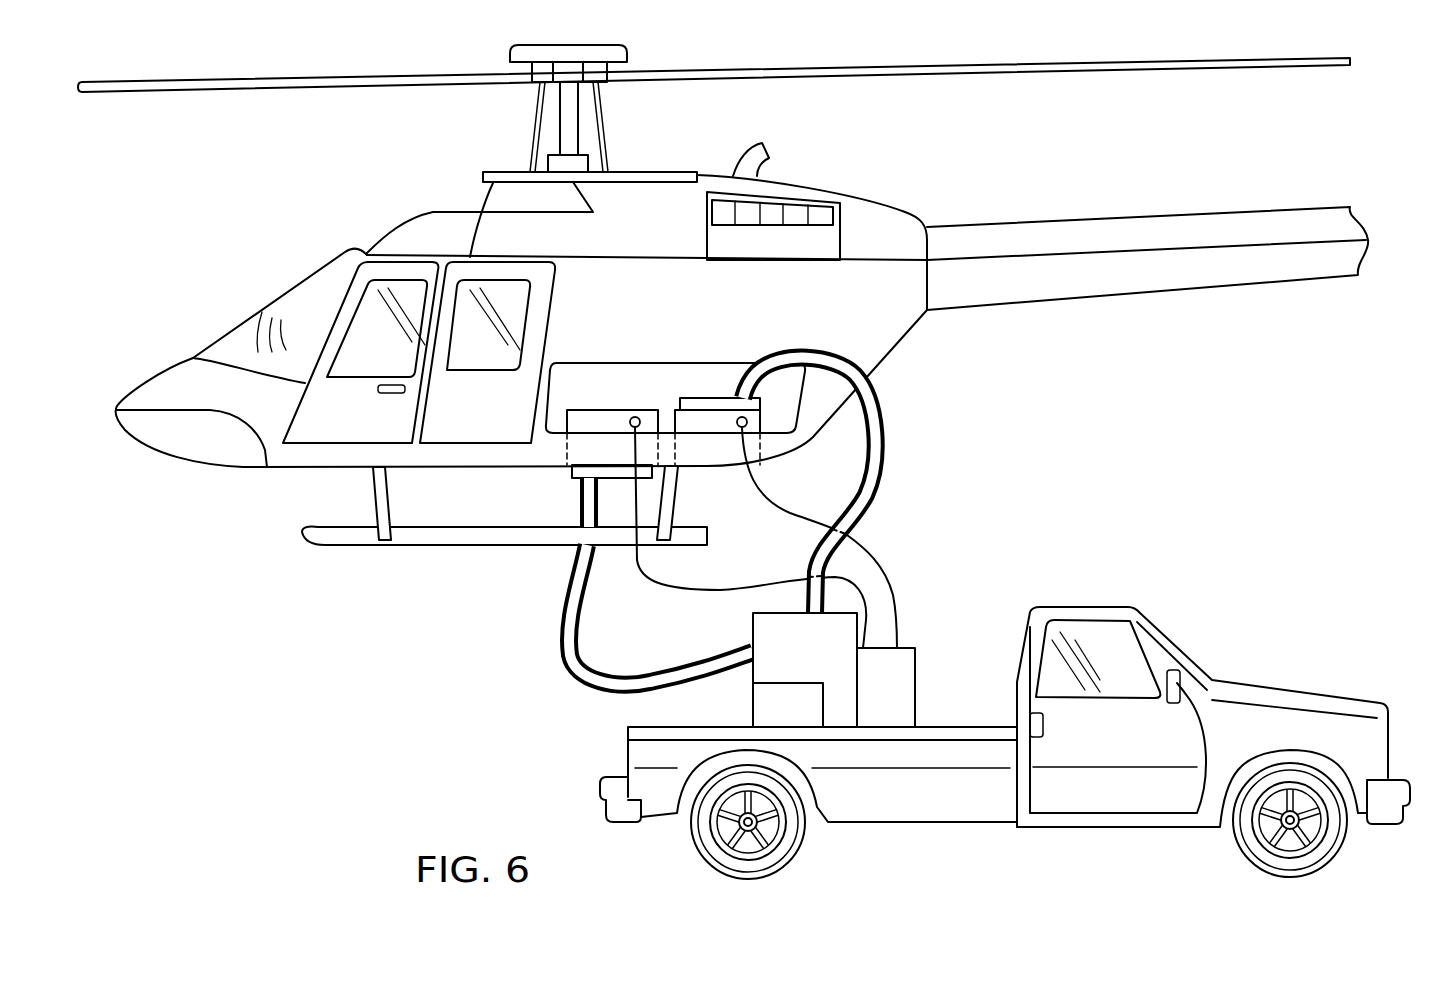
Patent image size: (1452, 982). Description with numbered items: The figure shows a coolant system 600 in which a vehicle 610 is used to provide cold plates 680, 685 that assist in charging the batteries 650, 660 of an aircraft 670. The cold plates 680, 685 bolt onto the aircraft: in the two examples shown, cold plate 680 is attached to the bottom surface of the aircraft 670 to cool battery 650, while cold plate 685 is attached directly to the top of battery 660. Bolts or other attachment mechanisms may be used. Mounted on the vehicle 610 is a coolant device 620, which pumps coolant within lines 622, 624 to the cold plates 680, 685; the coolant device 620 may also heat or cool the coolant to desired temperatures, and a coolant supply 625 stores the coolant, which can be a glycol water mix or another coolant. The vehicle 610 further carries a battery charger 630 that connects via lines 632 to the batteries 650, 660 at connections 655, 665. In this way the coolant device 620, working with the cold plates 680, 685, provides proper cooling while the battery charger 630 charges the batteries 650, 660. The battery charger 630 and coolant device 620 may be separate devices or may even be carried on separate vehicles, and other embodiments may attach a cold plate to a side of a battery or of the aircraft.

The coolant system 600 is at (1397, 122).
The vehicle 610 is at (1067, 827).
The coolant device 620 is at (753, 633).
The line 622 is at (812, 563).
The line 624 is at (875, 508).
The coolant supply 625 is at (788, 683).
The battery charger 630 is at (916, 690).
The line 632 is at (892, 598).
The battery 650 is at (602, 409).
The connection 655 is at (633, 416).
The battery 660 is at (705, 424).
The connection 665 is at (747, 421).
The aircraft 670 is at (405, 220).
The cold plate 680 is at (571, 476).
The cold plate 685 is at (703, 398).